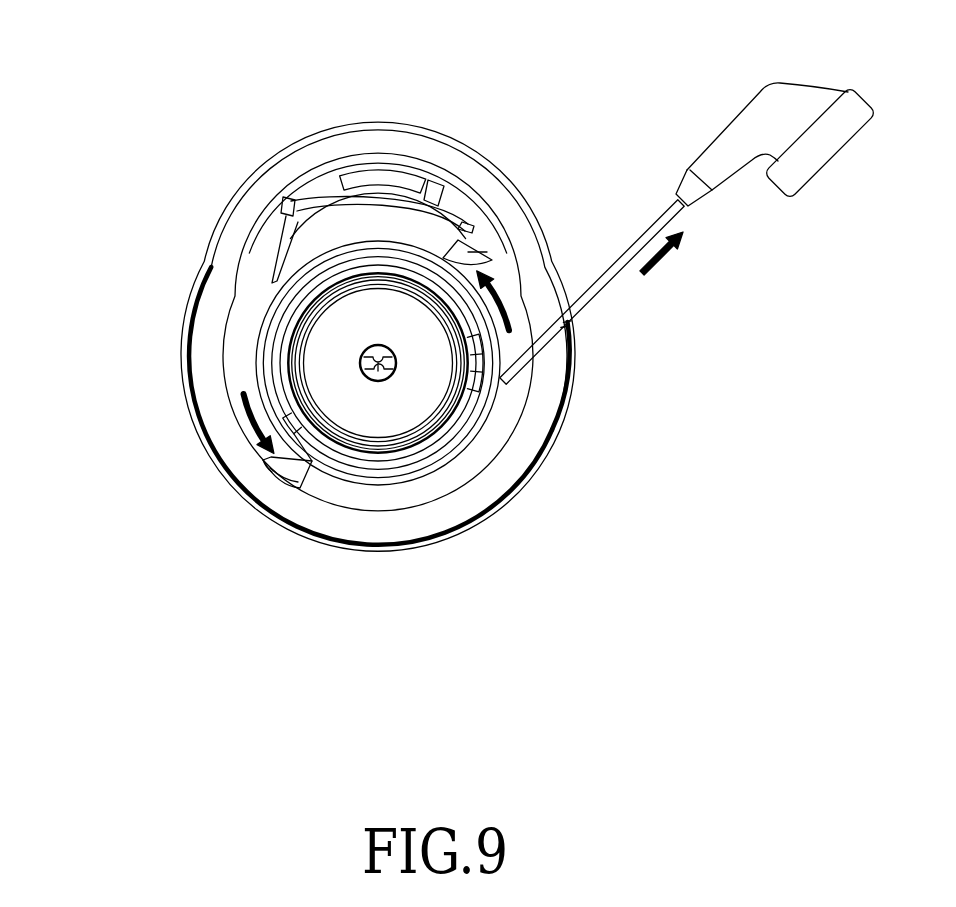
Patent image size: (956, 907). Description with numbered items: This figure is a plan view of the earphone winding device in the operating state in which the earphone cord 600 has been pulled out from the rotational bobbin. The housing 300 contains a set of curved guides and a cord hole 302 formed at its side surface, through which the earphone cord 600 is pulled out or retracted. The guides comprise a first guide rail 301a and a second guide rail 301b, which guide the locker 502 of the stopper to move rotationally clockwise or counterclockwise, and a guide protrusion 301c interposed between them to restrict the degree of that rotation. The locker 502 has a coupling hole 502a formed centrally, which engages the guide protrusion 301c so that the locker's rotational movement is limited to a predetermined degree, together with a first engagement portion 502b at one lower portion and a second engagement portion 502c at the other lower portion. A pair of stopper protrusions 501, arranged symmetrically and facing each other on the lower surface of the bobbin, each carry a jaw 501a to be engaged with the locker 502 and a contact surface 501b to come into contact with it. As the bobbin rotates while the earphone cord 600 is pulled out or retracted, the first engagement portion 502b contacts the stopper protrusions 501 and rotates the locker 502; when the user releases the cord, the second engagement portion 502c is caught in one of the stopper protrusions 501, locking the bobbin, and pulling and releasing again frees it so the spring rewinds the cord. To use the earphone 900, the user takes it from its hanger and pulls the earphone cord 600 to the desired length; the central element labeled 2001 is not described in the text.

The housing 300 is at (172, 384).
The first guide rail 301a is at (333, 147).
The second guide rail 301b is at (437, 205).
The guide protrusion 301c is at (397, 172).
The cord hole 302 is at (574, 320).
The stopper protrusions 501 is at (470, 252).
The jaw 501a is at (268, 458).
The contact surface 501b is at (315, 486).
The locker 502 is at (272, 216).
The coupling hole 502a is at (303, 198).
The first engagement portion 502b is at (445, 208).
The second engagement portion 502c is at (270, 278).
The earphone cord 600 is at (503, 378).
The earphone 900 is at (780, 93).
The hub 2001 is at (379, 370).